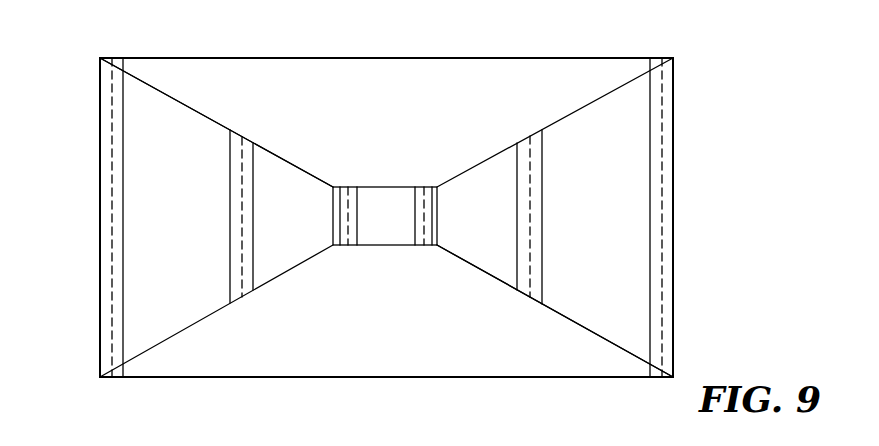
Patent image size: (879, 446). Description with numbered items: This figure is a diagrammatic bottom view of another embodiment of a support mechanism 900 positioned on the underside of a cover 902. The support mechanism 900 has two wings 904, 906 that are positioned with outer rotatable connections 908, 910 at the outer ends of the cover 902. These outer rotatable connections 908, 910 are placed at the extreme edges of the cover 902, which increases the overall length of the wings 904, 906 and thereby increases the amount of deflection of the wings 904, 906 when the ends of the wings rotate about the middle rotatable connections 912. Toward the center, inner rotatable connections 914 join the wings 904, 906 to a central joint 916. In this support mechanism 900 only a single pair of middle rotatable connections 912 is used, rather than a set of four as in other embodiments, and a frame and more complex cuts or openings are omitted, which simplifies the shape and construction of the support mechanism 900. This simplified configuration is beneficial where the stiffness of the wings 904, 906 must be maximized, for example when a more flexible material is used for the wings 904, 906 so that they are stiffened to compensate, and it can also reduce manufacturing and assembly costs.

The support mechanism 900 is at (588, 103).
The cover 902 is at (477, 75).
The wing 904 is at (192, 132).
The wing 906 is at (580, 303).
The outer rotatable connection 908 is at (105, 298).
The outer rotatable connection 910 is at (667, 298).
The middle rotatable connections 912 is at (238, 262).
The inner rotatable connections 914 is at (352, 247).
The central joint 916 is at (383, 204).